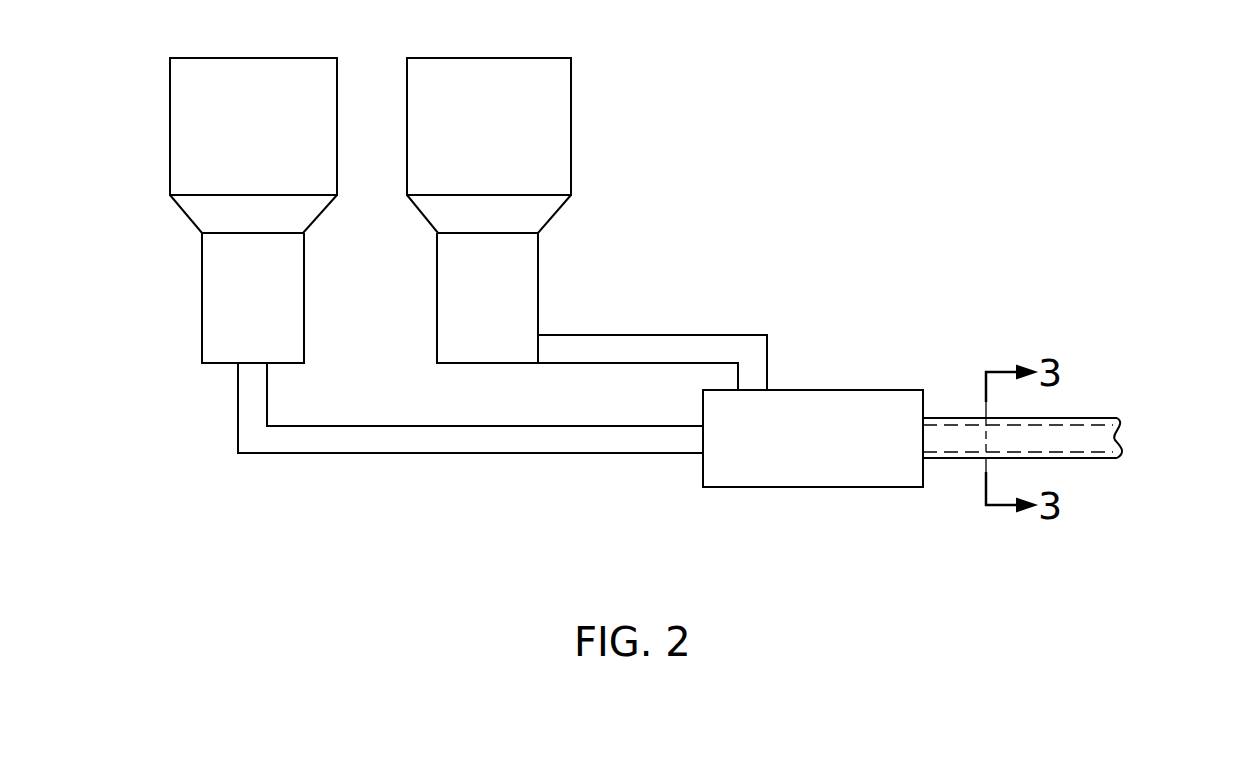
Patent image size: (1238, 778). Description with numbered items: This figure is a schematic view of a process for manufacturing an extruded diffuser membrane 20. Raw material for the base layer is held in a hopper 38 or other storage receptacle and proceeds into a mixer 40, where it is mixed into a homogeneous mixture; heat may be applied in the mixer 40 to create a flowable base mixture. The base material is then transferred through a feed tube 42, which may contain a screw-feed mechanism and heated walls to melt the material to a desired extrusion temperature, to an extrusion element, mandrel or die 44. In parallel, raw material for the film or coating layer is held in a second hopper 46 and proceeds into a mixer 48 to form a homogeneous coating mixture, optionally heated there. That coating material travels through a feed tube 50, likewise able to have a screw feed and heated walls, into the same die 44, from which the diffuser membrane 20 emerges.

The extruded diffuser membrane 20 is at (1116, 398).
The hopper 38 is at (182, 113).
The mixer 40 is at (212, 283).
The feed tube 42 is at (383, 453).
The die 44 is at (801, 488).
The hopper 46 is at (558, 114).
The mixer 48 is at (531, 283).
The feed tube 50 is at (674, 335).